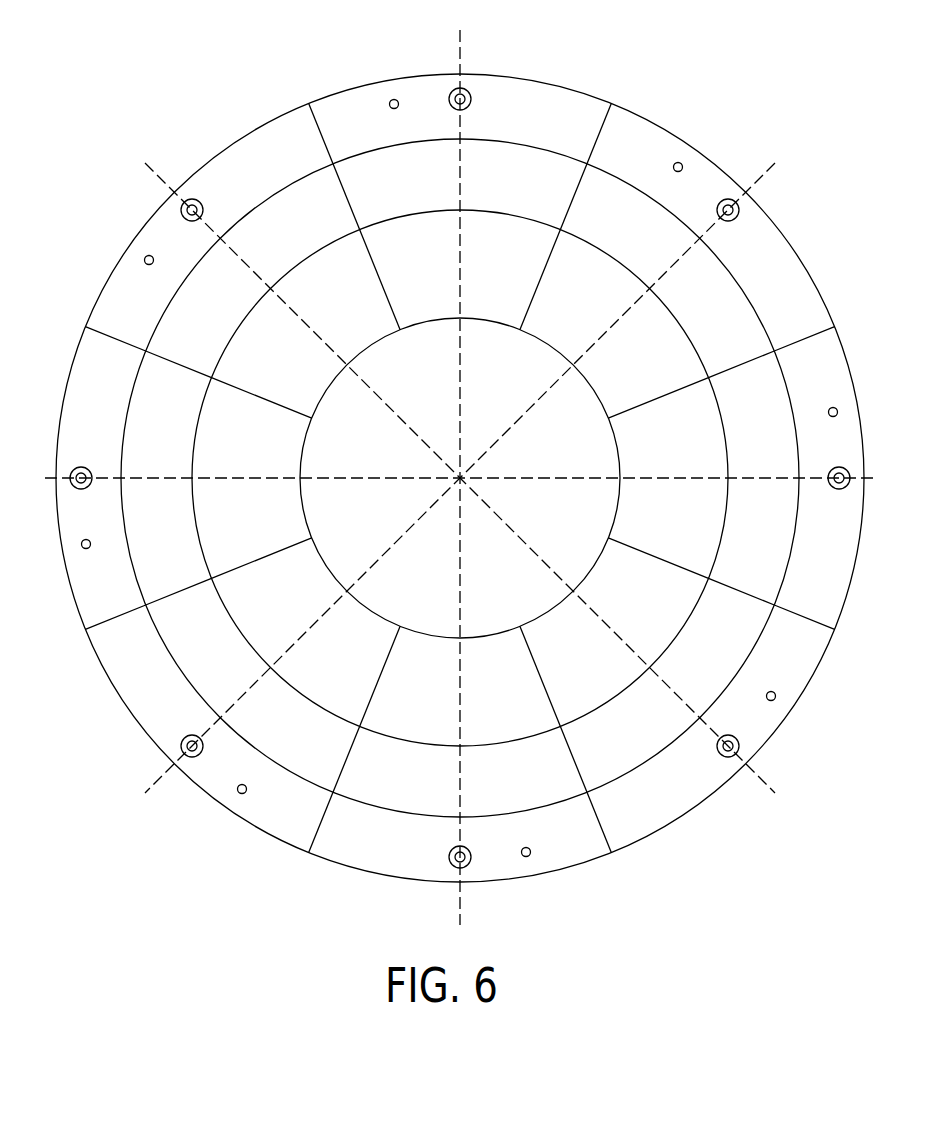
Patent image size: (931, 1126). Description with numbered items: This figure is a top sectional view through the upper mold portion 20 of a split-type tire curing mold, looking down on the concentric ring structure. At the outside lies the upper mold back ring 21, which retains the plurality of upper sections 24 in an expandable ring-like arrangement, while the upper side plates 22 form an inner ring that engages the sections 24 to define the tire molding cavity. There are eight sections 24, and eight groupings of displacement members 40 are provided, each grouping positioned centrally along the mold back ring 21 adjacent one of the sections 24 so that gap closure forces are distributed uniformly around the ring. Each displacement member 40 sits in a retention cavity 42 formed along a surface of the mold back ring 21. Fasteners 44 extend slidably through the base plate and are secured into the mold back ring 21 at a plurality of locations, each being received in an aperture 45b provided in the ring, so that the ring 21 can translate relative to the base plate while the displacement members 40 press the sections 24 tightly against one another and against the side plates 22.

The upper mold portion 20 is at (712, 97).
The upper mold back ring 21 is at (372, 138).
The upper side plates 22 is at (427, 282).
The upper sections 24 is at (402, 203).
The displacement members 40 is at (190, 200).
The retention cavity 42 is at (203, 205).
The fastener 44 is at (148, 255).
The aperture 45b is at (145, 264).